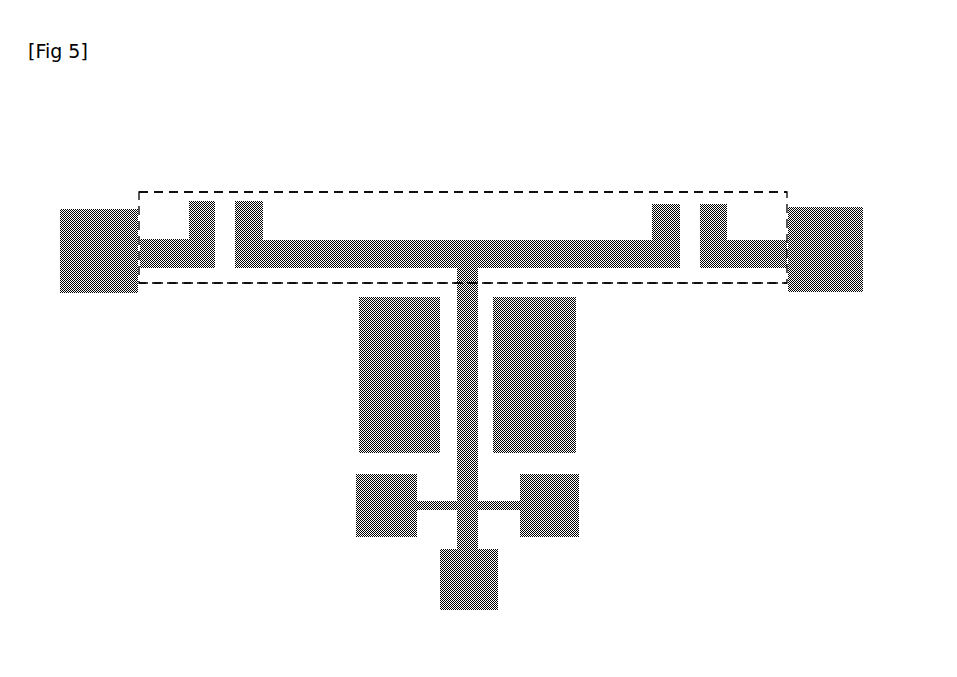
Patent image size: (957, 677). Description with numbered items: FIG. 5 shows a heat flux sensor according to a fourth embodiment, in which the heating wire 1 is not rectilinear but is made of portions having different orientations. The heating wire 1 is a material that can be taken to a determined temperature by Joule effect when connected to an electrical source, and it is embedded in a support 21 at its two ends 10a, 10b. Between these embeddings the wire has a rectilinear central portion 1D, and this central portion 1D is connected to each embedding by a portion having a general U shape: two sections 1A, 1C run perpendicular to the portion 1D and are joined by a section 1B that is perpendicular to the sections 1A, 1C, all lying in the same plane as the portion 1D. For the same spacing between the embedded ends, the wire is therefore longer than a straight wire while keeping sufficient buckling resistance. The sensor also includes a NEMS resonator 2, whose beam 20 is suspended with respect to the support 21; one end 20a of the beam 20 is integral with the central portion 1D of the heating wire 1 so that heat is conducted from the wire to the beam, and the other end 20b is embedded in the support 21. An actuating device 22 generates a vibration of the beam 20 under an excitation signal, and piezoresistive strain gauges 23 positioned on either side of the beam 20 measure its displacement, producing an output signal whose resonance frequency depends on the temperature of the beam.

The heating wire 1 is at (451, 192).
The section of heating wire 1A is at (190, 224).
The section of heating wire 1B is at (223, 203).
The section of heating wire 1C is at (267, 223).
The rectilinear central portion 1D is at (368, 237).
The end of heating wire 10a is at (152, 278).
The end of heating wire 10b is at (772, 231).
The resonator 2 is at (690, 453).
The beam 20 is at (453, 533).
The end of beam 20a is at (483, 271).
The end of beam 20b is at (481, 542).
The support 21 is at (461, 408).
The actuating device 22 is at (358, 385).
The piezoresistive strain gauge 23 is at (497, 503).